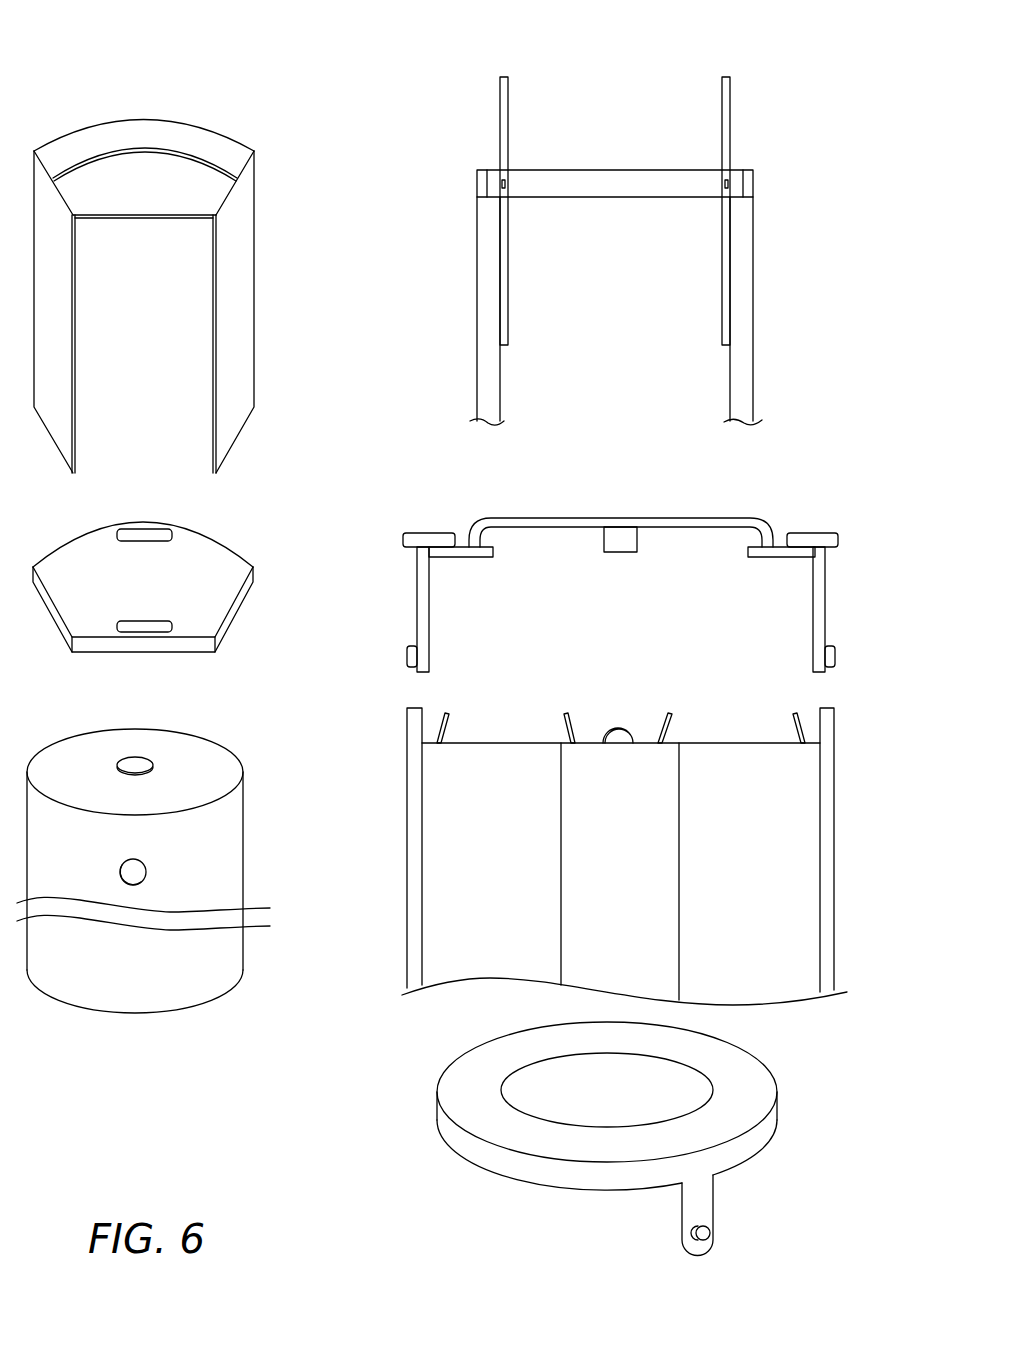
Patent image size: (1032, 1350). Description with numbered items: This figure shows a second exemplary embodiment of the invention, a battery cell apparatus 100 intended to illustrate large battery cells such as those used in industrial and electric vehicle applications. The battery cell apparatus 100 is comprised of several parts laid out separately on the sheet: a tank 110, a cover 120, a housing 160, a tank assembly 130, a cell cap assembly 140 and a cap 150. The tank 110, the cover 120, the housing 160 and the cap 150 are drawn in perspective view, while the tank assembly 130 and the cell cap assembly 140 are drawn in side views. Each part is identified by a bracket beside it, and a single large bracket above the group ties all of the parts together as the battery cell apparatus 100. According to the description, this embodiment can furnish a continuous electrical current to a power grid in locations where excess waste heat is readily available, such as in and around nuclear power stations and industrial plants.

The battery cell apparatus 100 is at (768, 75).
The tank 110 is at (305, 390).
The cover 120 is at (297, 692).
The tank assembly 130 is at (798, 375).
The cell cap assembly 140 is at (857, 803).
The cap 150 is at (813, 1235).
The housing 160 is at (296, 970).